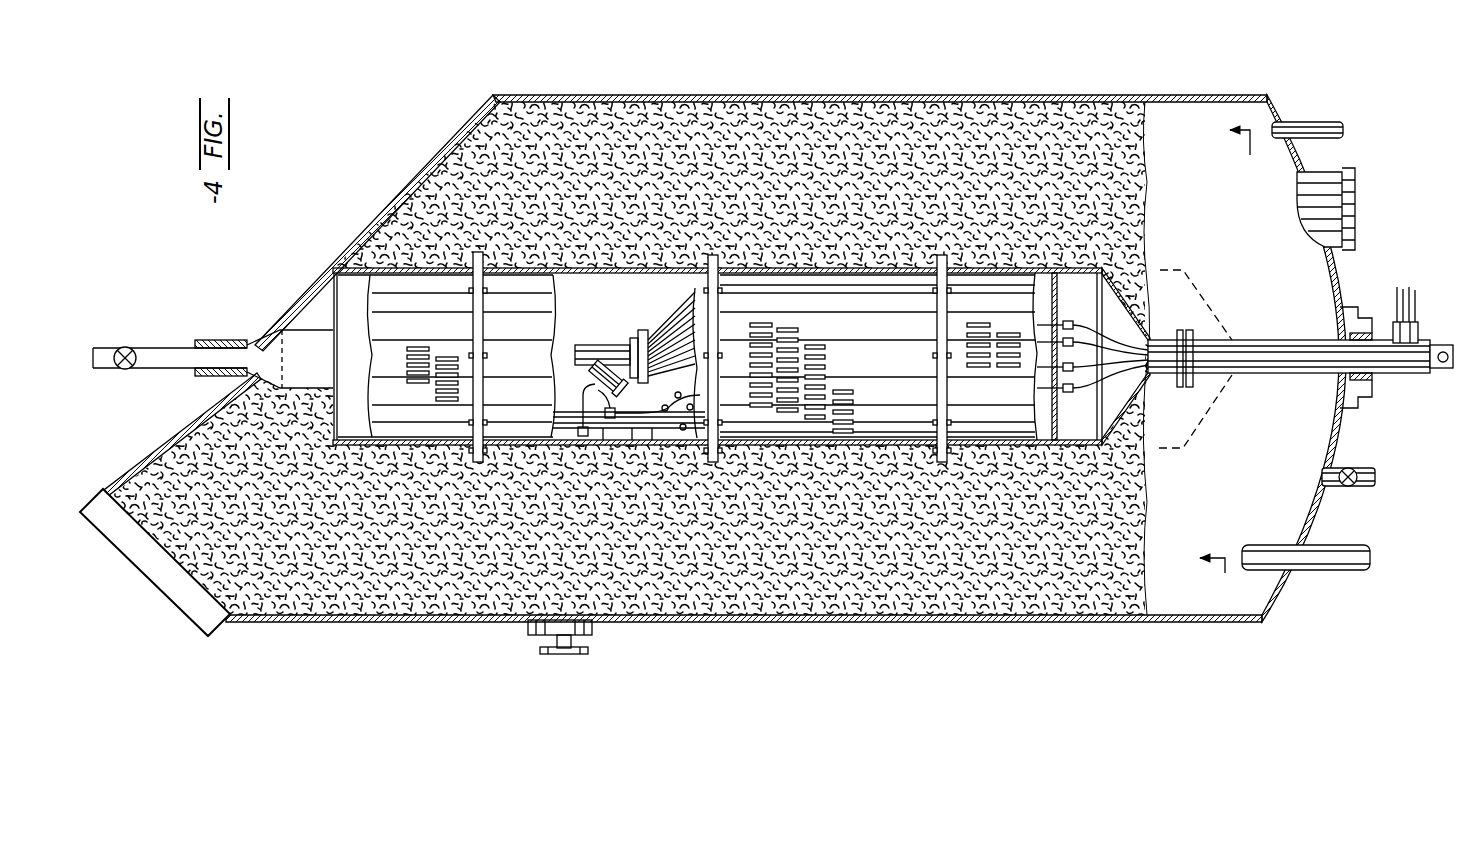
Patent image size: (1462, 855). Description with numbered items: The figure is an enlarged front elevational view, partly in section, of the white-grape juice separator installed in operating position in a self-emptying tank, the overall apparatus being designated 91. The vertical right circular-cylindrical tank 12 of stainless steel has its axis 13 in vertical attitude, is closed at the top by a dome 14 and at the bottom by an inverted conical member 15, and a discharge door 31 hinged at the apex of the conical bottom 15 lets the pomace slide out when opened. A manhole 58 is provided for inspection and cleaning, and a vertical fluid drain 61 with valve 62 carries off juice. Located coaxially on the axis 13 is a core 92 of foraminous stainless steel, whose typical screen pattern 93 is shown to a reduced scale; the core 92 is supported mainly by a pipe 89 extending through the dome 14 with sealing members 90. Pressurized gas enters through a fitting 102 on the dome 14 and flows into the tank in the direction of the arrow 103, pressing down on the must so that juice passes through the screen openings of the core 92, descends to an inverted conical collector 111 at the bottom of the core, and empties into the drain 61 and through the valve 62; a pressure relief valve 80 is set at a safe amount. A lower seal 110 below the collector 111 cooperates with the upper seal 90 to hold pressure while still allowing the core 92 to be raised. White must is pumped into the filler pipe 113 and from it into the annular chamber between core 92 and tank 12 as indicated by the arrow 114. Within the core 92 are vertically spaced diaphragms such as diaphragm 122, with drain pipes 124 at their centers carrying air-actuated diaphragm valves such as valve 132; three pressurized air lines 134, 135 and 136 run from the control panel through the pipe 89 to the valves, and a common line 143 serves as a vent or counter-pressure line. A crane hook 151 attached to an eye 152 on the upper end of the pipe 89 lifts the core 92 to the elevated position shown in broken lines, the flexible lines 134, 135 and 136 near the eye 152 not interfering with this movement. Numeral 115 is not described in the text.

The tank 12 is at (1122, 628).
The axis 13 is at (1392, 380).
The dome 14 is at (1293, 588).
The inverted conical member 15 is at (389, 202).
The discharge door 31 is at (157, 589).
The manhole 58 is at (590, 636).
The vertical fluid drain 61 is at (183, 347).
The valve 62 is at (124, 347).
The pressure relief valve 80 is at (1350, 488).
The pipe 89 is at (1287, 378).
The sealing members 90 is at (1373, 390).
The self-emptying tank apparatus 91 is at (952, 672).
The core 92 is at (1008, 457).
The screen pattern 93 is at (792, 408).
The fitting 102 is at (1303, 121).
The arrow 103 is at (1249, 164).
The lower seal 110 is at (226, 339).
The inverted conical collector 111 is at (298, 338).
The filler pipe 113 is at (1352, 572).
The arrow 114 is at (1221, 586).
The insulation fill 115 is at (1150, 540).
The diaphragm 122 is at (673, 334).
The drain pipes 124 is at (622, 350).
The valve 132 is at (589, 380).
The pressurized air line 134 is at (1069, 321).
The pressurized air line 135 is at (1075, 327).
The pressurized air line 136 is at (1110, 388).
The common line 143 is at (1130, 418).
The crane hook 151 is at (1428, 341).
The eye 152 is at (1440, 376).